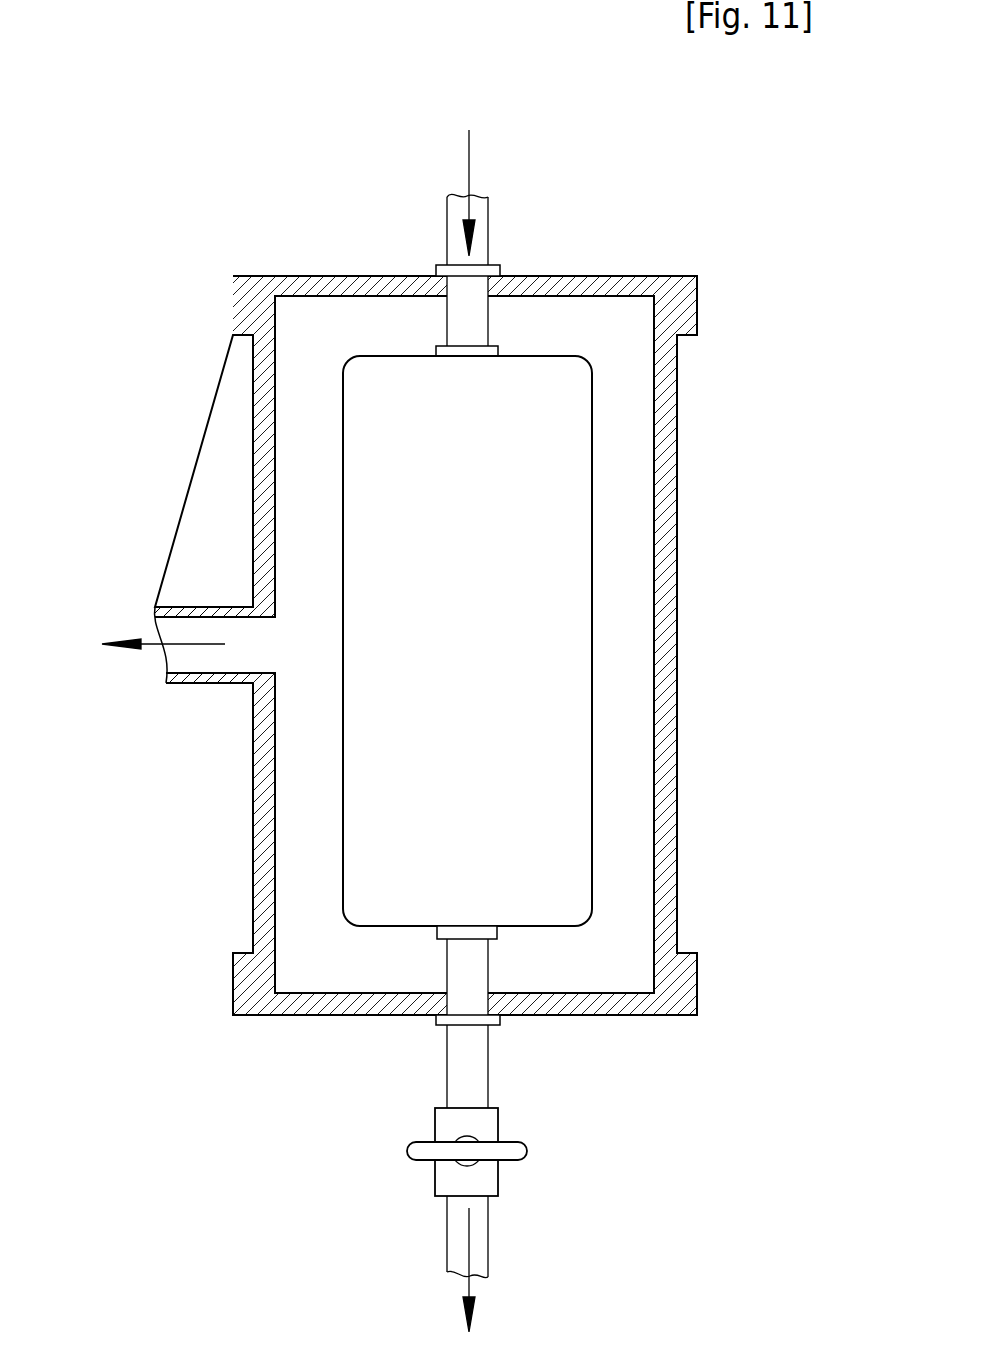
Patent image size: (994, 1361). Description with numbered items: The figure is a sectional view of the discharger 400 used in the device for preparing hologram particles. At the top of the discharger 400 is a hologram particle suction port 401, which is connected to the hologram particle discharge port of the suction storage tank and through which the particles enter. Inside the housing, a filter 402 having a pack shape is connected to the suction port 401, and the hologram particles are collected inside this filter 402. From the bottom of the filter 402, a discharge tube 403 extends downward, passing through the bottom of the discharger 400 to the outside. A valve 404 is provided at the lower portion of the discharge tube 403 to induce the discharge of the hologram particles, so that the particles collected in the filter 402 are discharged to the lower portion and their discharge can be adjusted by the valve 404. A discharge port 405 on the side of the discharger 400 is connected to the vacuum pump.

The discharger 400 is at (205, 208).
The hologram particle suction port 401 is at (488, 217).
The filter 402 is at (582, 723).
The discharge tube 403 is at (478, 1070).
The valve 404 is at (528, 1152).
The discharge port 405 is at (218, 608).